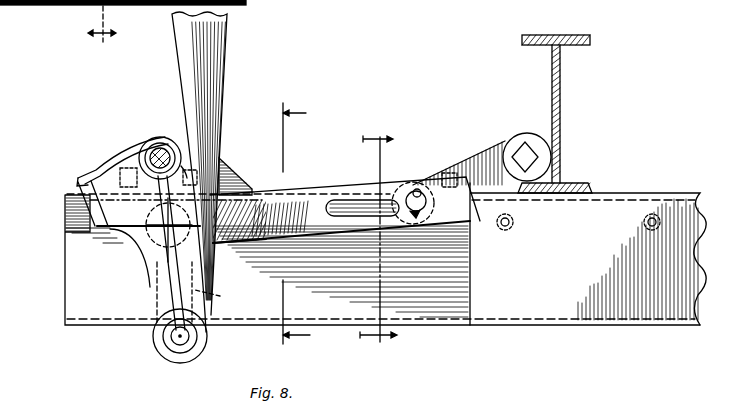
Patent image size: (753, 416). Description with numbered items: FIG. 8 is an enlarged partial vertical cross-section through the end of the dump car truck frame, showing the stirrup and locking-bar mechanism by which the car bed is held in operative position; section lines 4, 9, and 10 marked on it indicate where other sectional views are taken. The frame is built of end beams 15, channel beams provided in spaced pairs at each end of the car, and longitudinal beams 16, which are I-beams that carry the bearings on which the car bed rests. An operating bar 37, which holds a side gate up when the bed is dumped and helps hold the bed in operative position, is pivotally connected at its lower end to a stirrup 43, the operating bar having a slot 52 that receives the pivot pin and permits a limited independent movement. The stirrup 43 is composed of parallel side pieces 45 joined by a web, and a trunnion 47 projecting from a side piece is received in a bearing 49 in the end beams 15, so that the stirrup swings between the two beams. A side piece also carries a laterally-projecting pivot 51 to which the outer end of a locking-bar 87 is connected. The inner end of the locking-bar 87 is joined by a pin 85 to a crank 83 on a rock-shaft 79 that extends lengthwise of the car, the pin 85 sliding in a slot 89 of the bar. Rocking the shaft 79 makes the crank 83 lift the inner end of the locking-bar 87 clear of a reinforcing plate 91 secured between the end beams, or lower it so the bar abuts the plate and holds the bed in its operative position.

The section line 9— 9 is at (102, 33).
The section line 10— 10 is at (290, 226).
The section line 4— 4 is at (378, 241).
The end beams 15 is at (67, 262).
The longitudinal beams 16 is at (562, 130).
The operating bar 37 is at (214, 94).
The stirrup 43 is at (147, 283).
The side piece 45 is at (148, 140).
The trunnion 47 is at (163, 156).
The bearing 49 is at (226, 168).
The pivot 51 is at (133, 251).
The slot 52 is at (237, 261).
The rock-shaft 79 is at (528, 136).
The crank 83 is at (467, 166).
The pin 85 is at (405, 188).
The locking-bar 87 is at (305, 202).
The slot 89 is at (347, 198).
The reinforcing plate 91 is at (488, 268).